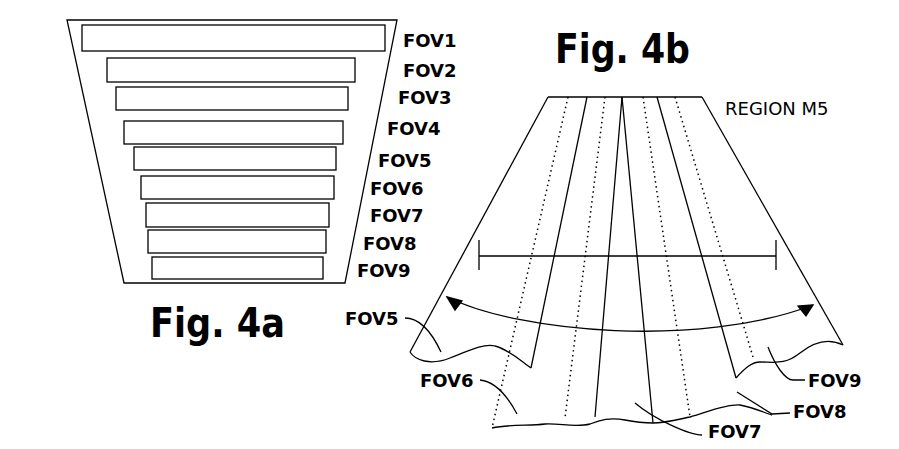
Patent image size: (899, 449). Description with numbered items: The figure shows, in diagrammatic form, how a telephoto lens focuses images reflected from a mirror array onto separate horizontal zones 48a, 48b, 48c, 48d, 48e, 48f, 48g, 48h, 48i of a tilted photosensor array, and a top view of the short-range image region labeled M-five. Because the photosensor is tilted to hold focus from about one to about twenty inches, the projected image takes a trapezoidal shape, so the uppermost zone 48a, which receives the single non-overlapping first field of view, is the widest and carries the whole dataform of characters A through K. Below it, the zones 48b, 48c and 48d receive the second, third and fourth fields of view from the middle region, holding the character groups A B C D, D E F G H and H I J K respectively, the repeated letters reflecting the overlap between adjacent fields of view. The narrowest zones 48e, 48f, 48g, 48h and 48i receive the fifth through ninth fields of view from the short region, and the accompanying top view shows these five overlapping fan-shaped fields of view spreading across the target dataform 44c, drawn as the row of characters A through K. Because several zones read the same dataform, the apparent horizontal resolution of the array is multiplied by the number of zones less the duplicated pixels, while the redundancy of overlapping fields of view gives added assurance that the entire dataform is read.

In FIG. 4a, the zone of the photosensor array 48a is at (88, 35).
In FIG. 4a, the zone of the photosensor array 48b is at (123, 73).
In FIG. 4a, the zone of the photosensor array 48c is at (125, 99).
In FIG. 4a, the zone of the photosensor array 48d is at (132, 132).
In FIG. 4a, the zone of the photosensor array 48e is at (138, 162).
In FIG. 4a, the zone of the photosensor array 48f is at (142, 188).
In FIG. 4a, the zone of the photosensor array 48g is at (148, 218).
In FIG. 4a, the zone of the photosensor array 48h is at (153, 246).
In FIG. 4a, the zone of the photosensor array 48i is at (158, 267).
In FIG. 4b, the scan region scale (region M5) 44c is at (793, 232).